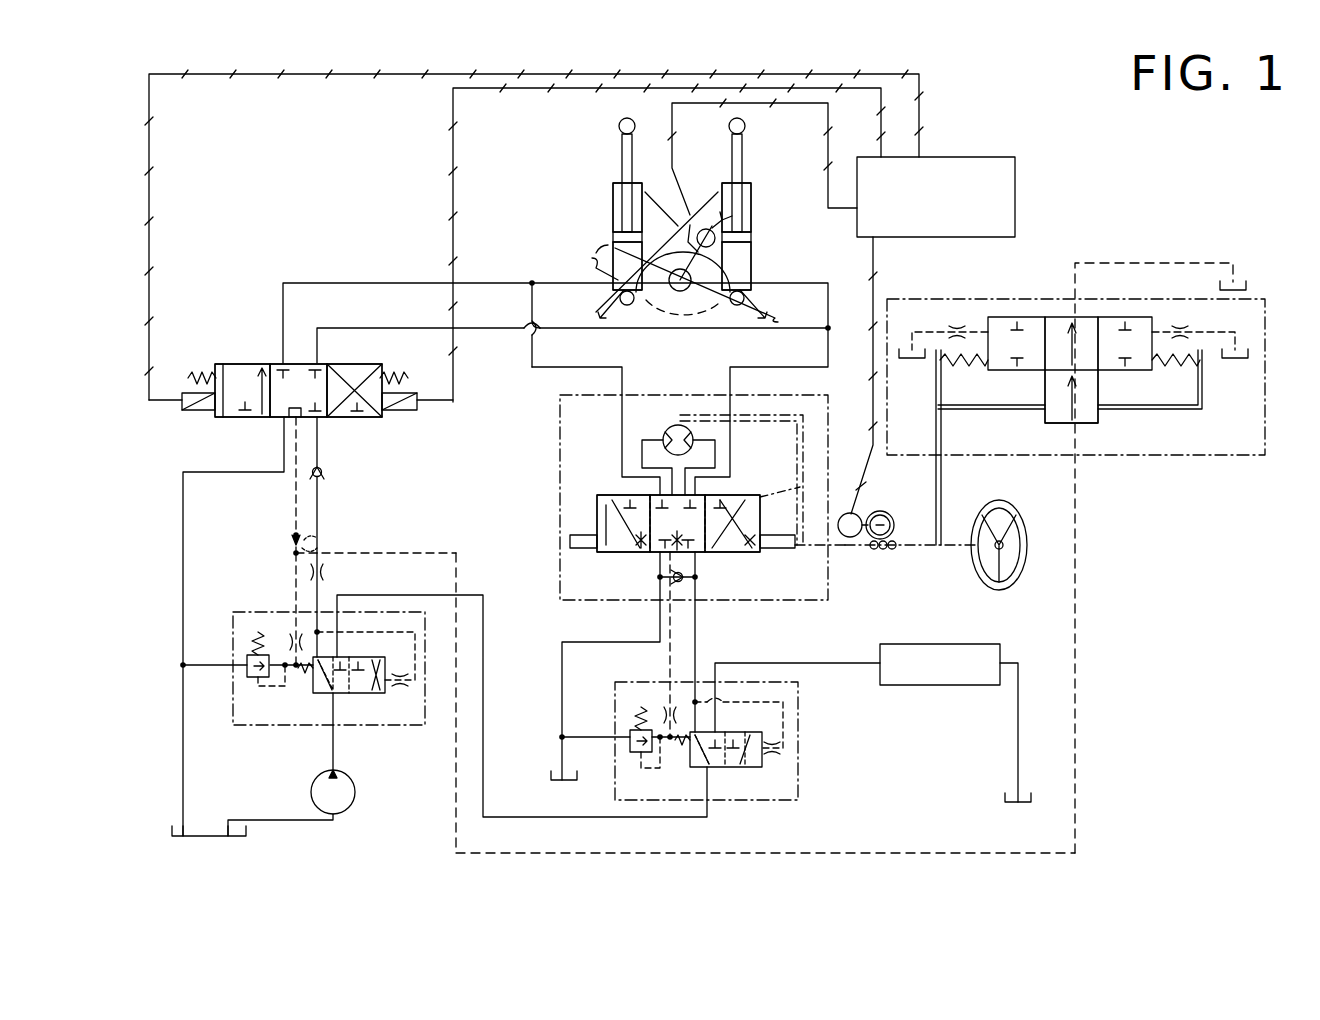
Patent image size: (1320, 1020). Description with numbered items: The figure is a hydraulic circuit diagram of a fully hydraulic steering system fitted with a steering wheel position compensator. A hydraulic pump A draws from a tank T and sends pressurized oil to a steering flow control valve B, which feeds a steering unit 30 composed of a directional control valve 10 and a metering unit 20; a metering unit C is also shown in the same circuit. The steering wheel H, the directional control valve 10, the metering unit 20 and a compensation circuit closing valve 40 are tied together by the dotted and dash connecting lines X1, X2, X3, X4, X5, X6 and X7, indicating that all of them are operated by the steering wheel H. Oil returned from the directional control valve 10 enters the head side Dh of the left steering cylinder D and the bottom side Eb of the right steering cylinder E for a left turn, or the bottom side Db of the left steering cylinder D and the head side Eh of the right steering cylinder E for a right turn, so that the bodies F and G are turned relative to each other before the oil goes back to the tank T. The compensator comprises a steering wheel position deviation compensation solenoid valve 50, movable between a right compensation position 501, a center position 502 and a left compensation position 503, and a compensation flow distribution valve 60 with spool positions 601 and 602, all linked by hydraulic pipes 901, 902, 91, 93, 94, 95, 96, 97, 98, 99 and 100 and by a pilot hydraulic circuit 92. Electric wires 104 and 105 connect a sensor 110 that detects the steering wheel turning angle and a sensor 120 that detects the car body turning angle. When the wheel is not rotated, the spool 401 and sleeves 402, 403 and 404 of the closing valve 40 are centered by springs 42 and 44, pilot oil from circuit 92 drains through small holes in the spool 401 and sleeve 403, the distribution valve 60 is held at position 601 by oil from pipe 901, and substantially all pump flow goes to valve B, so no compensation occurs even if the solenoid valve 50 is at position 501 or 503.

The directional control valve 10 is at (650, 494).
The electric wire 104 is at (667, 243).
The electric wire 105 is at (921, 104).
The steering wheel turning angle sensor 110 is at (862, 515).
The car body turning angle sensor 120 is at (703, 228).
The metering unit 20 is at (672, 424).
The steering unit 30 is at (560, 540).
The compensation circuit closing valve 40 is at (1076, 383).
The spool 401 is at (1098, 420).
The sleeve 402 is at (1110, 317).
The sleeve 403 is at (1050, 317).
The sleeve 404 is at (1005, 317).
The spring 42 is at (1173, 362).
The spring 44 is at (958, 362).
The steering wheel position deviation compensation solenoid valve 50 is at (301, 376).
The right compensation position 501 is at (360, 364).
The neutral position 502 is at (297, 364).
The left compensation position 503 is at (245, 364).
The compensation flow distribution valve 60 is at (302, 665).
The spool position 601 is at (370, 690).
The spool position 602 is at (320, 688).
The hydraulic pipe 91 is at (296, 535).
The pilot hydraulic circuit 92 is at (850, 858).
The hydraulic pipe 93 is at (183, 598).
The hydraulic pipe 94 is at (1112, 263).
The hydraulic pipe 95 is at (370, 328).
The hydraulic pipe 96 is at (336, 283).
The hydraulic pipe 97 is at (598, 817).
The hydraulic pipe 98 is at (697, 652).
The hydraulic pipe 99 is at (580, 367).
The hydraulic pipe 100 is at (818, 346).
The hydraulic pipe 901 is at (325, 590).
The hydraulic pipe 902 is at (317, 440).
The hydraulic pump A is at (355, 792).
The steering flow control valve B is at (798, 775).
The metering unit C is at (940, 685).
The left steering cylinder D is at (615, 178).
The head side of left steering cylinder Dh is at (616, 201).
The bottom side of left steering cylinder Db is at (615, 282).
The right steering cylinder E is at (750, 196).
The head side of right steering cylinder Eh is at (750, 218).
The bottom side of right steering cylinder Eb is at (750, 275).
The body F is at (594, 255).
The body G is at (618, 296).
The steering wheel H is at (1014, 585).
The tank T is at (232, 838).
The connecting line X1 is at (942, 555).
The connecting line X2 is at (810, 552).
The connecting line X3 is at (780, 503).
The connecting line X4 is at (786, 440).
The connecting line X5 is at (941, 492).
The connecting line X6 is at (962, 410).
The connecting line X7 is at (1165, 410).